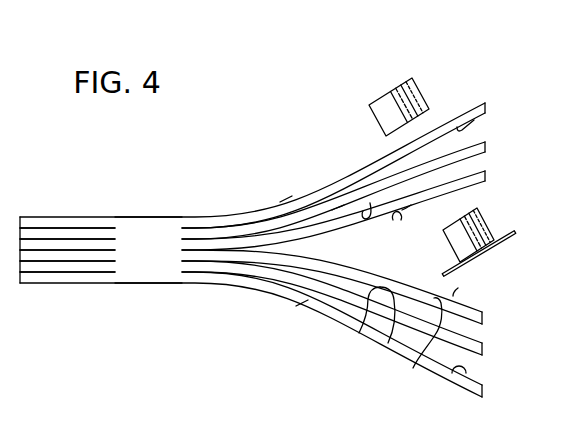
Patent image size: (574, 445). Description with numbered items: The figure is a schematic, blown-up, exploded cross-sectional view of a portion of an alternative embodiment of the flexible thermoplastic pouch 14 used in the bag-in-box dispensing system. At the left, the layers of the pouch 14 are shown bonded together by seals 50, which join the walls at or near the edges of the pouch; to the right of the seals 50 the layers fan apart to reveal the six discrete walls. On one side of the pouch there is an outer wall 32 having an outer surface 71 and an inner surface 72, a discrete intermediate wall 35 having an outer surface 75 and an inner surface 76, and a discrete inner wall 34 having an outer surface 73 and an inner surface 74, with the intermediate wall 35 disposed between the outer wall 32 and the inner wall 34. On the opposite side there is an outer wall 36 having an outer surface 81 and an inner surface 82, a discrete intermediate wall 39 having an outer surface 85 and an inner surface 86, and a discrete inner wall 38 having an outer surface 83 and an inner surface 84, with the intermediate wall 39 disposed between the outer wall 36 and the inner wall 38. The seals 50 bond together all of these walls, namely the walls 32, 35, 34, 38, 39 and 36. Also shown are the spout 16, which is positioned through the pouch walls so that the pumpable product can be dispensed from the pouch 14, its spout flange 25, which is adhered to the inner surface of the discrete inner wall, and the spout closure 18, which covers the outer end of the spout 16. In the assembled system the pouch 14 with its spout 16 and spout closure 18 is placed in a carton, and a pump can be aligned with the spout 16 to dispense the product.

The flexible thermoplastic pouch 14 is at (59, 211).
The seals 50 is at (144, 225).
The spout closure 18 is at (383, 102).
The spout 16 is at (486, 219).
The spout flange 25 is at (511, 238).
The outer wall 32 is at (489, 103).
The inner surface 72 is at (475, 121).
The discrete intermediate wall 35 is at (489, 142).
The discrete inner wall 34 is at (489, 171).
The discrete inner wall 38 is at (488, 317).
The discrete intermediate wall 39 is at (488, 345).
The outer wall 36 is at (488, 386).
The outer surface 71 is at (285, 200).
The outer surface 75 is at (337, 208).
The inner surface 76 is at (370, 203).
The outer surface 73 is at (401, 220).
The inner surface 74 is at (406, 214).
The outer surface 81 is at (300, 303).
The inner surface 82 is at (462, 378).
The outer surface 83 is at (413, 368).
The inner surface 84 is at (458, 288).
The outer surface 85 is at (388, 343).
The inner surface 86 is at (359, 333).